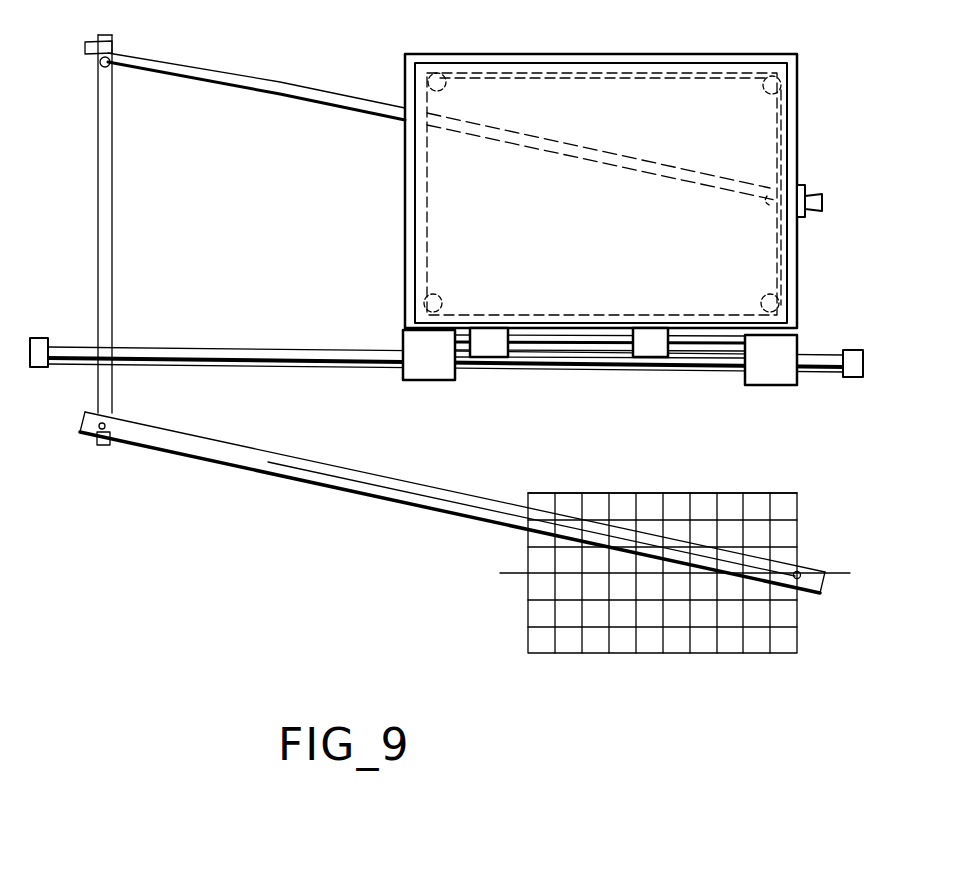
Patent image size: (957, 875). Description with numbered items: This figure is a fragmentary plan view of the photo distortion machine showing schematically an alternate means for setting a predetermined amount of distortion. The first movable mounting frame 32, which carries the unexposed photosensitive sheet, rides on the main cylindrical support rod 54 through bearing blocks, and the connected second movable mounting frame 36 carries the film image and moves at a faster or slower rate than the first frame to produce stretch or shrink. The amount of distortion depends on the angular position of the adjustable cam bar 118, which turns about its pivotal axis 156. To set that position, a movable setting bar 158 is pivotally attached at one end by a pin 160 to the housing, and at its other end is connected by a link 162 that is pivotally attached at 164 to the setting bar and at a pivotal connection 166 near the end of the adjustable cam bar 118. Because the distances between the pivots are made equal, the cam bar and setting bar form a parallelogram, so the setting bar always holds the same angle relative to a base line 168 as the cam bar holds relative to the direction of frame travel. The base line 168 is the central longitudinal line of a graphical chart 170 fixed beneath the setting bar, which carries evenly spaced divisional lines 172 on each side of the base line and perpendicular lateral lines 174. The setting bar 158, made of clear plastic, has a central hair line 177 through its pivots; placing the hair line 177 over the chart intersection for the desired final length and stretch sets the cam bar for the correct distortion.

The first movable mounting frame 32 is at (507, 53).
The second movable mounting frame 36 is at (575, 62).
The main cylindrical support rod 54 is at (341, 347).
The adjustable cam bar 118 is at (330, 102).
The pivotal axis of the adjustable cam bar 156 is at (793, 228).
The movable setting bar 158 is at (343, 466).
The pin 160 is at (800, 572).
The link 162 is at (111, 237).
The pivotal connection to the setting bar 164 is at (98, 432).
The pivotal connection near the end of the adjustable cam arm 166 is at (109, 57).
The base line 168 is at (498, 574).
The graphical chart 170 is at (672, 700).
The divisional lines 172 is at (788, 603).
The lateral lines 174 is at (609, 503).
The central longitudinal hair line 177 is at (475, 507).